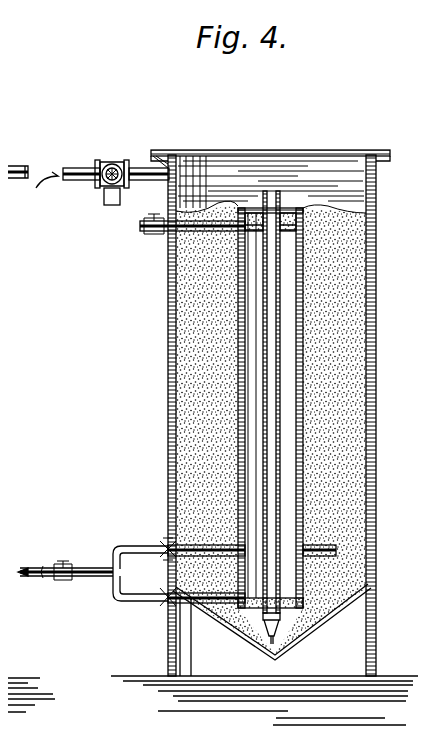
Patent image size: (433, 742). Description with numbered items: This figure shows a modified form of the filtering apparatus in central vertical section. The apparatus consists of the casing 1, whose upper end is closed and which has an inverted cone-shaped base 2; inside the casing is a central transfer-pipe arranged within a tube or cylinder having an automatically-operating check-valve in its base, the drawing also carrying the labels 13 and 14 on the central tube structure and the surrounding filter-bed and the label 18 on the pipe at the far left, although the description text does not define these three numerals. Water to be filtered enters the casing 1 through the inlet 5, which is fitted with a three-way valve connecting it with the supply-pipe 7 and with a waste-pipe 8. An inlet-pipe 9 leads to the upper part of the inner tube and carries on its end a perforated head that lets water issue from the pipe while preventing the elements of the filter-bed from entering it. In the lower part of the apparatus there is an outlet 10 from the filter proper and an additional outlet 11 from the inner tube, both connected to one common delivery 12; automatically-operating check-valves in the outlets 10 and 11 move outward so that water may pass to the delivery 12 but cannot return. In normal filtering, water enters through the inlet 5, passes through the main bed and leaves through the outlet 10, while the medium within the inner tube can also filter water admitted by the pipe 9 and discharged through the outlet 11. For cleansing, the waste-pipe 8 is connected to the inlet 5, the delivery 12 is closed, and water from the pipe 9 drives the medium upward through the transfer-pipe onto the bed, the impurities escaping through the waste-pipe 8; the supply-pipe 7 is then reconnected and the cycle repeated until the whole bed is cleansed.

The casing 1 is at (305, 651).
The inverted cone-shaped base 2 is at (318, 622).
The inlet 5 is at (150, 165).
The supply-pipe 7 is at (68, 183).
The waste-pipe 8 is at (112, 183).
The inlet-pipe 9 is at (192, 231).
The outlet 10 is at (248, 542).
The additional outlet 11 is at (201, 592).
The delivery 12 is at (93, 573).
The central tube 13 is at (270, 417).
The filtering material 14 is at (295, 440).
The pipe 18 is at (18, 164).